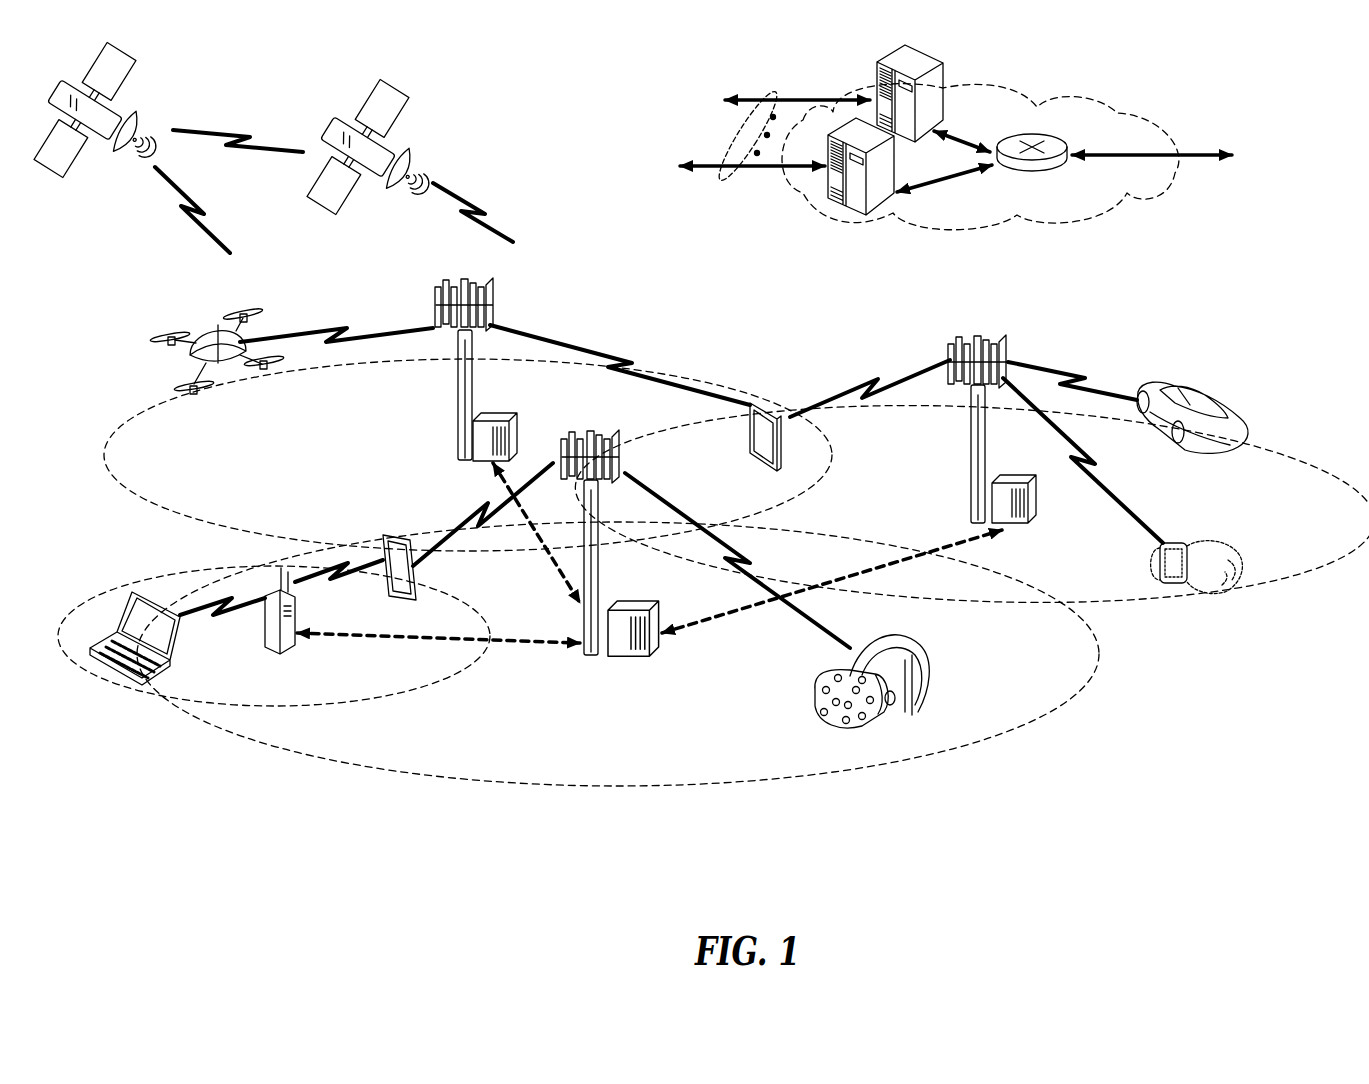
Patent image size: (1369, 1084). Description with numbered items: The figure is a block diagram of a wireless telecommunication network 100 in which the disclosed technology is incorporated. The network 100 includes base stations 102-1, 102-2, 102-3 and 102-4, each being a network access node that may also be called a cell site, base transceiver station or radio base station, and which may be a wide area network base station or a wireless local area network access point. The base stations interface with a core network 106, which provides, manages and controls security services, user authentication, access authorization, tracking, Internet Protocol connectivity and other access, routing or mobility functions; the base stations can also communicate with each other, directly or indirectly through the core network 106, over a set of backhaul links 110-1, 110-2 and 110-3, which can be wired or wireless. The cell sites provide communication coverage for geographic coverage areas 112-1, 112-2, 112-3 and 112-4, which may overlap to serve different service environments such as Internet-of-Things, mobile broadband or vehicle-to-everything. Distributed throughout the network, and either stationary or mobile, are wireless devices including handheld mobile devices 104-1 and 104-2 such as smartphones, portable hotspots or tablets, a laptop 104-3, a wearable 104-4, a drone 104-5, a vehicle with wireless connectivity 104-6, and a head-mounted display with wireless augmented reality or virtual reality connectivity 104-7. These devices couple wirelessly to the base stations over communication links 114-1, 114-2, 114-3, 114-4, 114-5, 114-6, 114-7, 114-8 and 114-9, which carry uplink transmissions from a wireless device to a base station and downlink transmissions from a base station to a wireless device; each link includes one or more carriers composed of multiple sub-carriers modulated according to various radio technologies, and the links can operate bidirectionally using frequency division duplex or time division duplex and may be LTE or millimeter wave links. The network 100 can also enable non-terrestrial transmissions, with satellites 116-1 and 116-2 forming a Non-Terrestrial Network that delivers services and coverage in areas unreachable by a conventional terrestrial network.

The wireless telecommunication network 100 is at (1300, 113).
The base station 102-1 is at (593, 655).
The base station 102-2 is at (458, 410).
The base station 102-3 is at (971, 440).
The base station 102-4 is at (265, 642).
The handheld mobile device 104-1 is at (417, 582).
The handheld mobile device 104-2 is at (750, 442).
The laptop 104-3 is at (114, 680).
The wearable 104-4 is at (1180, 545).
The drone 104-5 is at (230, 384).
The vehicle with wireless connectivity 104-6 is at (1214, 400).
The head-mounted display 104-7 is at (923, 660).
The core network 106 is at (1063, 221).
The backhaul link 110-1 is at (334, 636).
The backhaul link 110-2 is at (897, 568).
The backhaul link 110-3 is at (557, 567).
The geographic coverage area 112-1 is at (523, 786).
The geographic coverage area 112-2 is at (397, 697).
The geographic coverage area 112-3 is at (170, 512).
The geographic coverage area 112-4 is at (1270, 442).
The communication link 114-1 is at (750, 562).
The communication link 114-2 is at (472, 522).
The communication link 114-3 is at (193, 612).
The communication link 114-4 is at (337, 580).
The communication link 114-5 is at (332, 328).
The communication link 114-6 is at (627, 362).
The communication link 114-7 is at (868, 386).
The communication link 114-8 is at (1095, 468).
The communication link 114-9 is at (1072, 377).
The satellite 116-1 is at (134, 122).
The satellite 116-2 is at (405, 163).